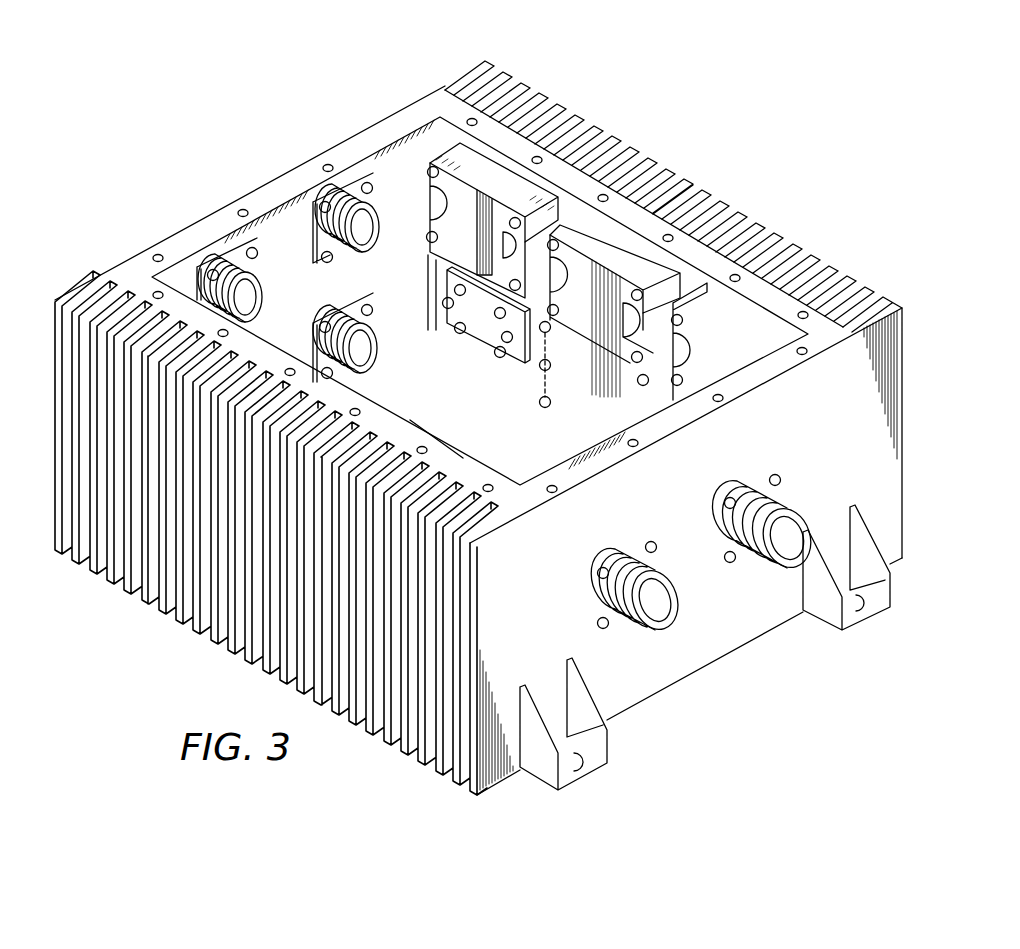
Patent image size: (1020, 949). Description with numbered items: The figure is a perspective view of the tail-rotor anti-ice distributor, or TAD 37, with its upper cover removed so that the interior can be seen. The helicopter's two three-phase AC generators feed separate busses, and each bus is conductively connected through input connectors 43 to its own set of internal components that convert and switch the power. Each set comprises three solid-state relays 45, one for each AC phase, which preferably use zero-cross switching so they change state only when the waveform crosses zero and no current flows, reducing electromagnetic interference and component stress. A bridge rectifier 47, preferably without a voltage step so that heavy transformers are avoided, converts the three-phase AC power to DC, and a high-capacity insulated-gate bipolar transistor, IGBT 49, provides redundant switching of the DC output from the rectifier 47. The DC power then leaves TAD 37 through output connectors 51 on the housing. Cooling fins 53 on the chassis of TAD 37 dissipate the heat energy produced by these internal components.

The tail-rotor anti-ice distributor (TAD) 37 is at (363, 84).
The input connectors 43 is at (270, 285).
The solid-state relays 45 is at (460, 248).
The bridge rectifier 47 is at (573, 410).
The insulated-gate bipolar transistor (IGBT) 49 is at (490, 330).
The output connectors 51 is at (627, 558).
The cooling fins 53 is at (545, 98).